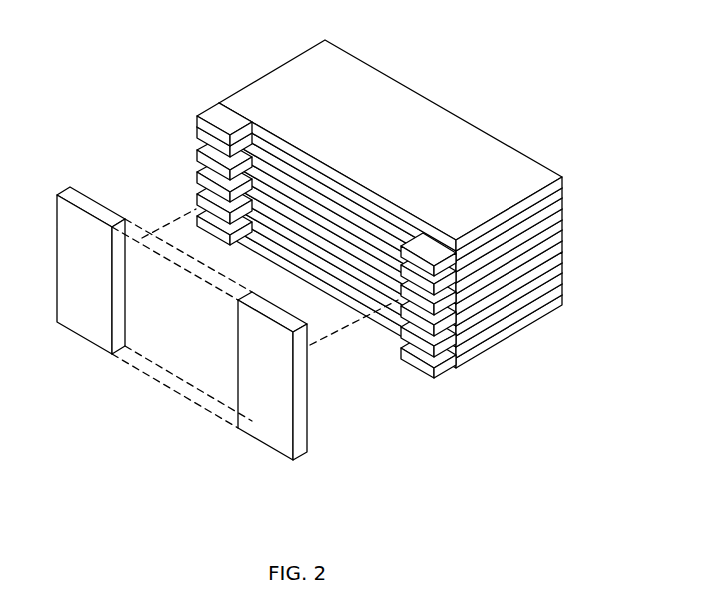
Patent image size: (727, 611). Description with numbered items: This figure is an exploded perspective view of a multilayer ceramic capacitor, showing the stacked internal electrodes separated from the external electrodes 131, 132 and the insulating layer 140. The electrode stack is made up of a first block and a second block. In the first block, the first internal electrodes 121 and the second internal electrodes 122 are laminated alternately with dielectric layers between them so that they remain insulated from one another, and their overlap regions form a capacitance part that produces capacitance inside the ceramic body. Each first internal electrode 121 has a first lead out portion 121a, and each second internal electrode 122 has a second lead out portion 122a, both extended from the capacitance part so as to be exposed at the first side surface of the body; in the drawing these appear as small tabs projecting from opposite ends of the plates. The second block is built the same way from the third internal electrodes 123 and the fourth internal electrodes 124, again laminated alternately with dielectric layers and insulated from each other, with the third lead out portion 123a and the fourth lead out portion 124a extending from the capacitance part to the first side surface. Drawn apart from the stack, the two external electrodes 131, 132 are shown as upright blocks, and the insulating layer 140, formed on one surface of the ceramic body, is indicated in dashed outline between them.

The first internal electrode 121 is at (562, 227).
The first lead out portion 121a is at (213, 160).
The second internal electrode 122 is at (562, 238).
The second lead out portion 122a is at (432, 298).
The third internal electrode 123 is at (382, 110).
The third lead out portion 123a is at (224, 117).
The fourth internal electrode 124 is at (562, 193).
The fourth lead out portion 124a is at (430, 245).
The external electrode 131 is at (85, 302).
The external electrode 132 is at (268, 407).
The insulating layer 140 is at (167, 387).